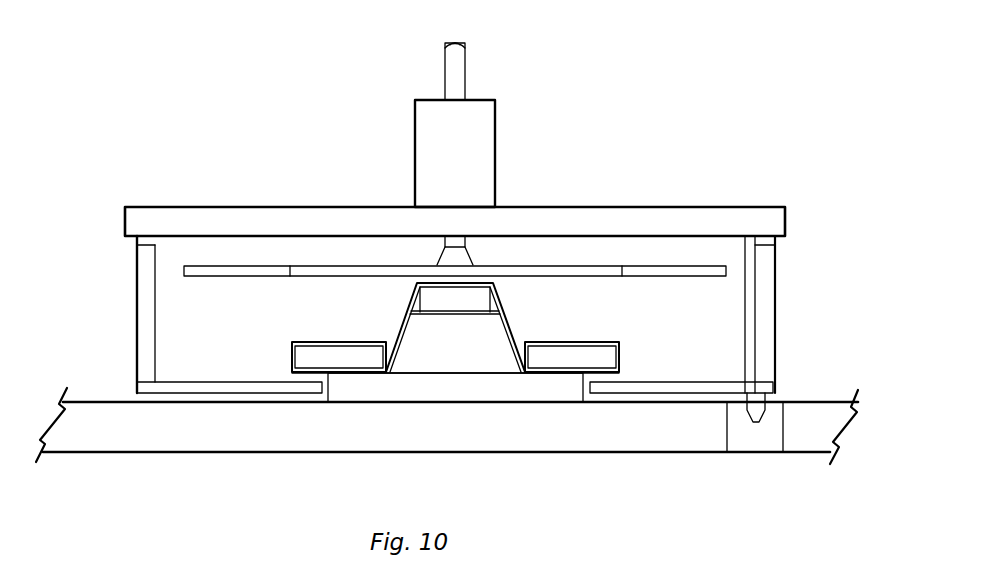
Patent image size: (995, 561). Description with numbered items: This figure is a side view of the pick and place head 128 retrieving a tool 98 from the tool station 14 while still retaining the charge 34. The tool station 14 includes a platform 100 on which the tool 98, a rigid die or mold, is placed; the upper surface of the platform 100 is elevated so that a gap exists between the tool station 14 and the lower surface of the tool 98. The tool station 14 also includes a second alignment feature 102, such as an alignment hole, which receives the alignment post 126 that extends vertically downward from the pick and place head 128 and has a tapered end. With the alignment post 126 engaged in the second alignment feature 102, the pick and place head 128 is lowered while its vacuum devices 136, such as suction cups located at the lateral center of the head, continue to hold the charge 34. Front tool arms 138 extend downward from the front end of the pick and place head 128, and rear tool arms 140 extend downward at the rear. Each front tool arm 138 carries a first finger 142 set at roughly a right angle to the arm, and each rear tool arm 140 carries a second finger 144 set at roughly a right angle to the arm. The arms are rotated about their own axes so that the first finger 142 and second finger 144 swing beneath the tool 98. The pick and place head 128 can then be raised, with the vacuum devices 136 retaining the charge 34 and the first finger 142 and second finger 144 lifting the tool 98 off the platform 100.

The tool station 14 is at (222, 82).
The pick and place head 128 is at (540, 116).
The vacuum device 136 is at (470, 262).
The charge 34 is at (222, 272).
The alignment post 126 is at (748, 248).
The rear tool arm 140 is at (770, 277).
The front tool arm 138 is at (142, 302).
The first finger 142 is at (218, 386).
The second finger 144 is at (658, 385).
The tool 98 is at (518, 338).
The platform 100 is at (510, 395).
The second alignment feature 102 is at (790, 400).